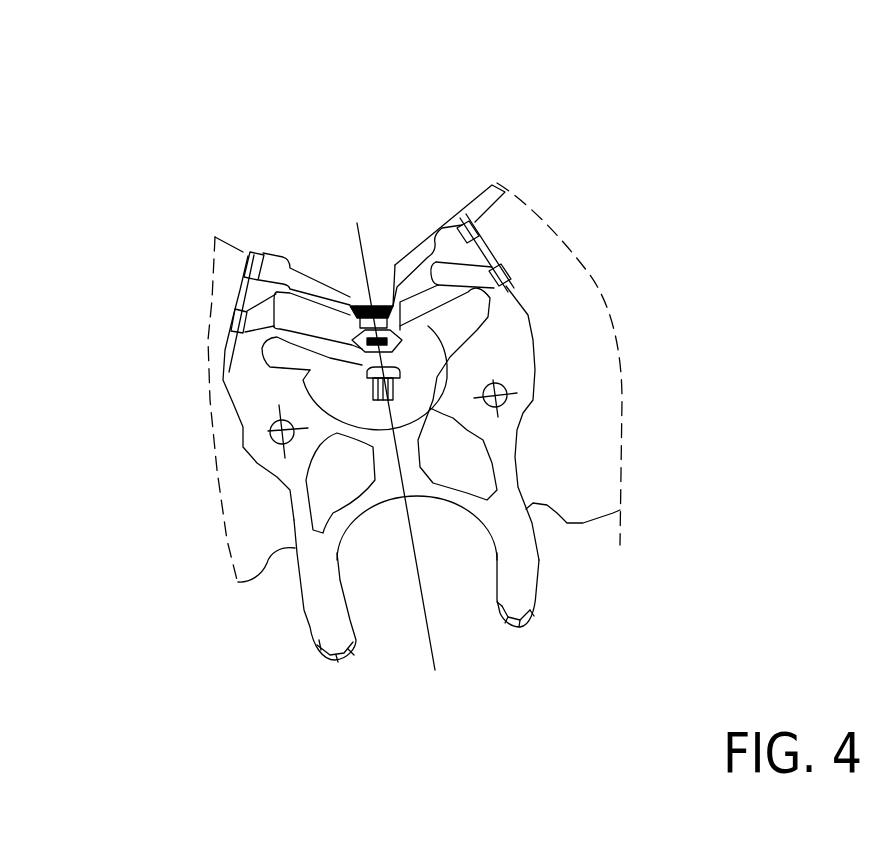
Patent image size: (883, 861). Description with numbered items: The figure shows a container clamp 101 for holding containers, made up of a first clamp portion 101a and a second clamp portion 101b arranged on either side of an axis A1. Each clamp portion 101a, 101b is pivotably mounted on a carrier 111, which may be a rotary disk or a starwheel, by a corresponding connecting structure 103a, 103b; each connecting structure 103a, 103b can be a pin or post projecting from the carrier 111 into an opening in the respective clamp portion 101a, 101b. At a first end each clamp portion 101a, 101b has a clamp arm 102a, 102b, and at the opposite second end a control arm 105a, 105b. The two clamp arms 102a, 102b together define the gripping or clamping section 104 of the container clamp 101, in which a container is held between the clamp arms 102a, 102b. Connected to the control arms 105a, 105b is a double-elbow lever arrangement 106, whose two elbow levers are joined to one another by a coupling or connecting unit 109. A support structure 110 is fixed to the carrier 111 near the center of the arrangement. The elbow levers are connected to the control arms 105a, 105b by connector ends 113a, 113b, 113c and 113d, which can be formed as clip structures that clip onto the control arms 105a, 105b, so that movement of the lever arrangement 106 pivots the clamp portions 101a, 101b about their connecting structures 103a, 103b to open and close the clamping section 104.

The container clamp 101 is at (135, 141).
The first clamp portion 101a is at (204, 429).
The second clamp portion 101b is at (565, 357).
The clamp arm 102a is at (320, 625).
The clamp arm 102b is at (525, 604).
The connecting structure 103a is at (270, 430).
The connecting structure 103b is at (500, 394).
The clamping section 104 is at (401, 684).
The control arm 105a is at (262, 300).
The control arm 105b is at (472, 260).
The double-elbow lever arrangement 106 is at (464, 160).
The coupling or connecting unit 109 is at (355, 303).
The support structure 110 is at (367, 377).
The carrier 111 is at (565, 287).
The connector end 113a is at (260, 327).
The connector end 113b is at (268, 278).
The connector end 113c is at (478, 230).
The connector end 113d is at (505, 268).
The axis A1 is at (391, 427).